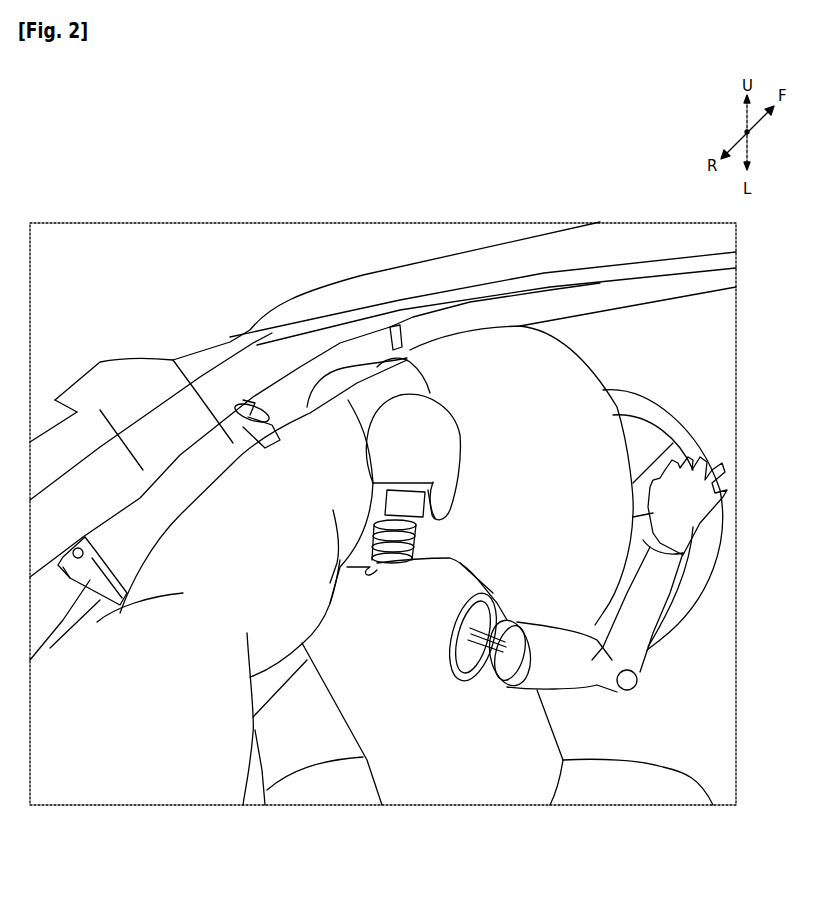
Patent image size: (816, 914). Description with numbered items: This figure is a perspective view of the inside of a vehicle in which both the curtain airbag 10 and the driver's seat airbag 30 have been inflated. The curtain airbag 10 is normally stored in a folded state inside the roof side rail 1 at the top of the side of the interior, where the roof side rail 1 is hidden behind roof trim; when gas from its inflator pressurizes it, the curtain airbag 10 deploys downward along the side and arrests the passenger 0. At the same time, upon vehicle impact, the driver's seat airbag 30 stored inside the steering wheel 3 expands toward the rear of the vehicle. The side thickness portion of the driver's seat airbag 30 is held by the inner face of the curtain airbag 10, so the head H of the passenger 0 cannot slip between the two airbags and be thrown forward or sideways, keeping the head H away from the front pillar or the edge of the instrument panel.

The roof side rail 1 is at (90, 490).
The side curtain airbag 10 is at (222, 530).
The head H is at (403, 433).
The driver's seat airbag 30 is at (535, 355).
The steering wheel 3 is at (648, 403).
The passenger 0 is at (453, 773).